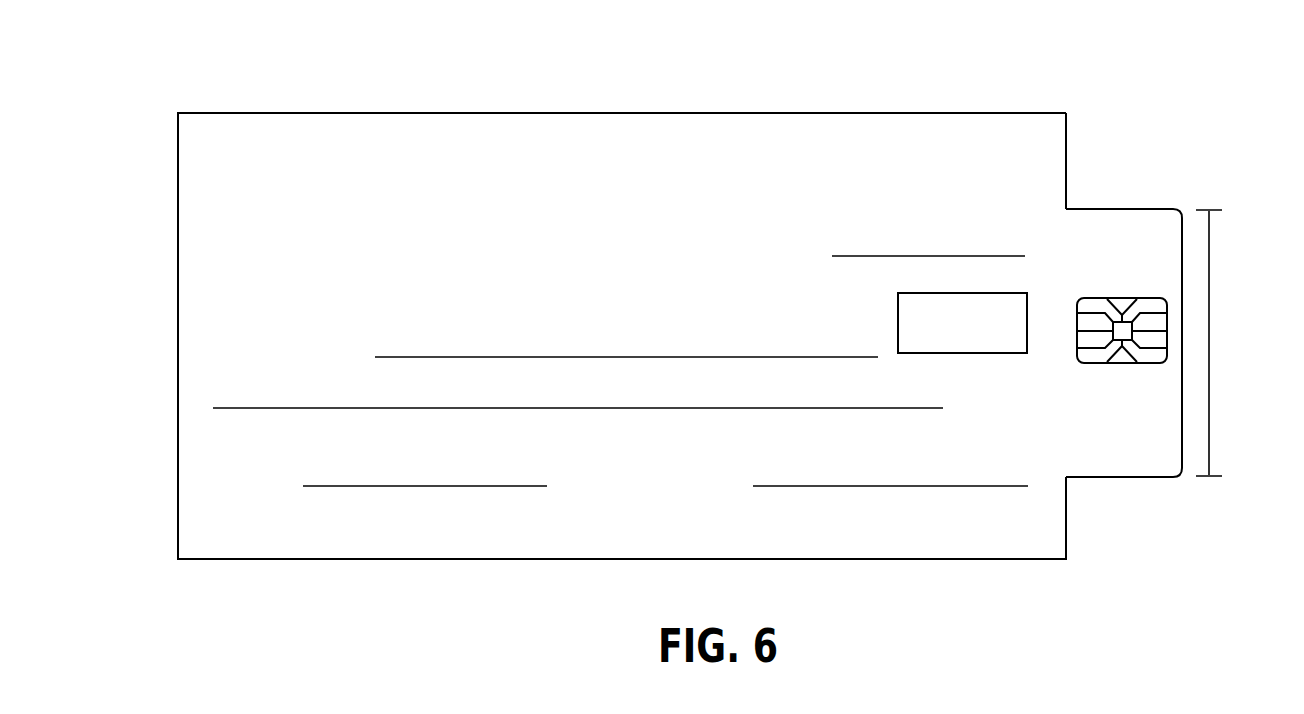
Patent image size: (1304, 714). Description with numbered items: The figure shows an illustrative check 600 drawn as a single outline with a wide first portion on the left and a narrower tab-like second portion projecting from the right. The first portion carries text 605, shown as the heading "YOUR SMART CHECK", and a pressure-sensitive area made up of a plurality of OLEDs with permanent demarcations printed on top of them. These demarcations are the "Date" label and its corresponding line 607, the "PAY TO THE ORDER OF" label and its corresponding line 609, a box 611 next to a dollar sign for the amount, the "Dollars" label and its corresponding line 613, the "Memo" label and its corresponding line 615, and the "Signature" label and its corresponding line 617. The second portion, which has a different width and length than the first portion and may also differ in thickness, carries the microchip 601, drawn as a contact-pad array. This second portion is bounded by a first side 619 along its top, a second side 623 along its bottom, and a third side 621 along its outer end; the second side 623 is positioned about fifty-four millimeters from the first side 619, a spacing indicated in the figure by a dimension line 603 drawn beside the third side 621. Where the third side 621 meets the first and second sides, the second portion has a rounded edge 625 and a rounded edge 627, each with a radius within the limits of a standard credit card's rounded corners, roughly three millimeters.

The check 600 is at (248, 52).
The microchip 601 is at (1118, 297).
The tab height 603 is at (1212, 283).
The text 605 is at (485, 147).
The Date line 607 is at (767, 241).
The PAY TO THE ORDER OF line 609 is at (237, 291).
The box 611 is at (1008, 290).
The Dollars line 613 is at (1052, 399).
The Memo line 615 is at (271, 490).
The Signature line 617 is at (679, 490).
The first side 619 is at (1101, 208).
The third side 621 is at (1187, 336).
The second side 623 is at (1120, 482).
The rounded edge 625 is at (1182, 210).
The rounded edge 627 is at (1183, 478).